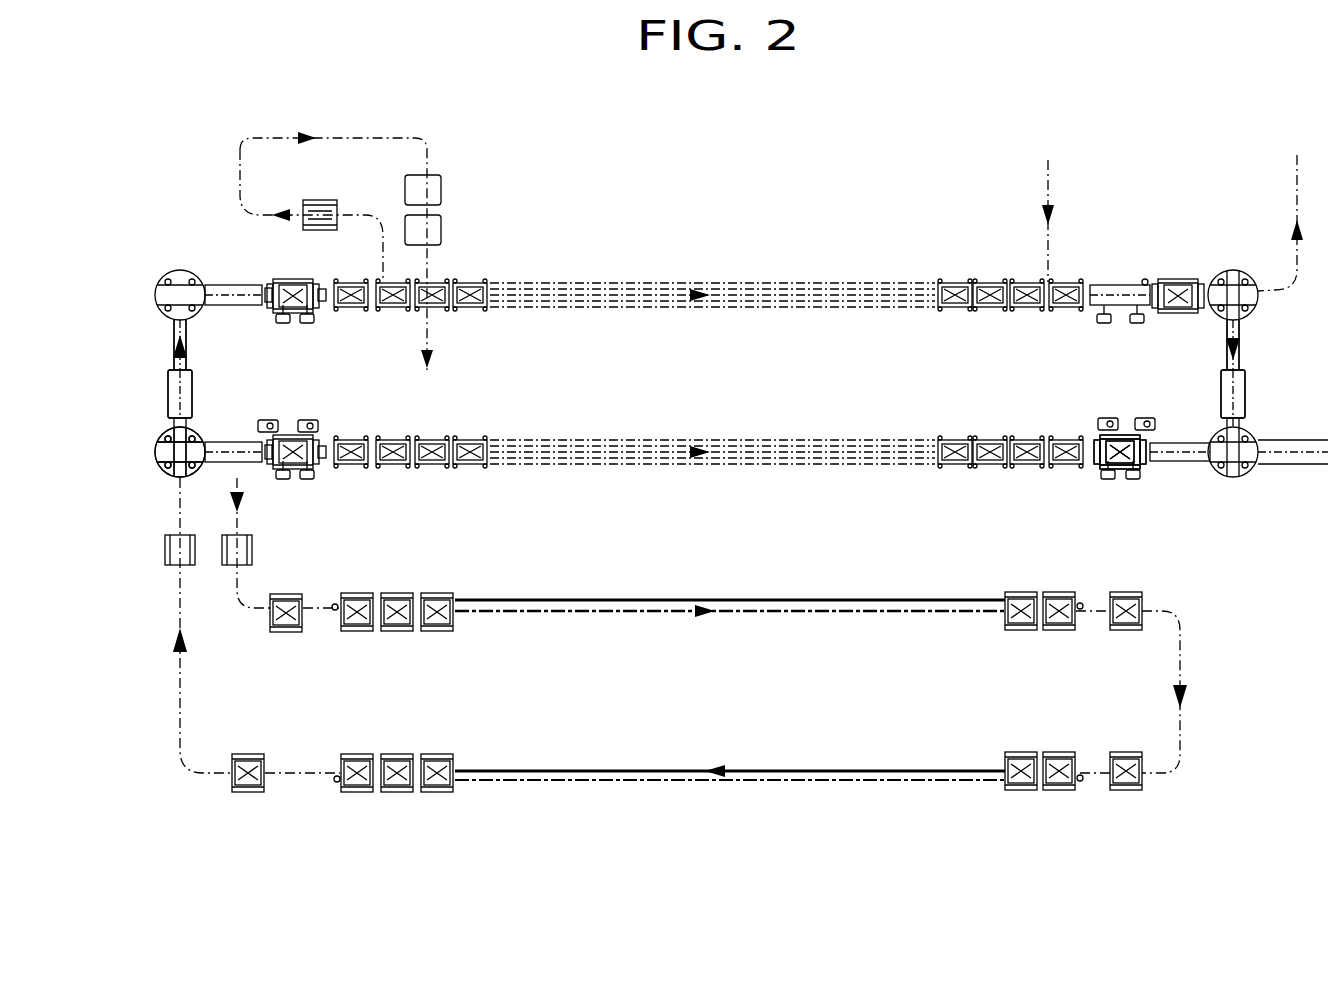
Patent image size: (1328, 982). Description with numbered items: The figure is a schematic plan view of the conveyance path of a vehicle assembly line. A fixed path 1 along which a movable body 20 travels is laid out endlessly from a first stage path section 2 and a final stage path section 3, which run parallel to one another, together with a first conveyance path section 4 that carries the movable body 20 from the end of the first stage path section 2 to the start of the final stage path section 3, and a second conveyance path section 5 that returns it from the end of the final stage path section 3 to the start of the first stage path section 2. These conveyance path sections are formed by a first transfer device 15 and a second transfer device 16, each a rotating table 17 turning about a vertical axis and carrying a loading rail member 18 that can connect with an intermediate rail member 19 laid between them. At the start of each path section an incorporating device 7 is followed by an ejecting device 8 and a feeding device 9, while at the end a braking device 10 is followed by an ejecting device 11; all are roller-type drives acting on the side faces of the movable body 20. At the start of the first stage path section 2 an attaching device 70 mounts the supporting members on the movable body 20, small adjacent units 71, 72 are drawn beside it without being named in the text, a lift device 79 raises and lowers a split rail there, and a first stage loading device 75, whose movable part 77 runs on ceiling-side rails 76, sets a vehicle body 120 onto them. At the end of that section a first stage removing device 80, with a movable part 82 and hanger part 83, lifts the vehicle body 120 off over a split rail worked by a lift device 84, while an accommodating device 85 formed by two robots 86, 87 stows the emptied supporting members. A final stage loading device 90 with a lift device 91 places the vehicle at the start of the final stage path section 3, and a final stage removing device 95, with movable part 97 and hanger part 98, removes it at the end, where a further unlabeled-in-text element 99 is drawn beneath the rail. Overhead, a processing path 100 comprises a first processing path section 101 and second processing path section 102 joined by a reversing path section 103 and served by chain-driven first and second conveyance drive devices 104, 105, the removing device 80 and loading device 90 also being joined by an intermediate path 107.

The fixed path 1 is at (712, 253).
The first stage path section 2 is at (758, 445).
The final stage path section 3 is at (742, 292).
The first conveyance path section 4 is at (196, 380).
The second conveyance path section 5 is at (1246, 370).
The incorporating device 7 is at (280, 280).
The ejecting device 8 is at (338, 311).
The feeding device 9 is at (372, 311).
The braking device 10 is at (1085, 311).
The ejecting device 11 is at (1132, 283).
The first transfer device 15 is at (1268, 320).
The second transfer device 16 is at (200, 353).
The rotating table 17 is at (186, 270).
The loading rail member 18 is at (160, 435).
The intermediate rail member 19 is at (172, 346).
The movable body 20 is at (166, 392).
The attaching device 70 is at (1121, 430).
The sensor 71 is at (1100, 417).
The sensor 72 is at (1146, 417).
The first stage loading device 75 is at (1178, 476).
The ceiling-side rails 76 is at (1266, 440).
The movable part 77 is at (1125, 482).
The lift device 79 is at (1105, 488).
The first stage removing device 80 is at (296, 480).
The movable part 82 is at (355, 474).
The hanger part 83 is at (433, 174).
The lift device 84 is at (312, 482).
The accommodating device 85 is at (294, 395).
The automatic accommodating device 86 is at (260, 418).
The automatic accommodating device 87 is at (318, 417).
The final stage loading device 90 is at (296, 326).
The lift device 91 is at (262, 326).
The final stage removing device 95 is at (1147, 262).
The movable part 97 is at (1193, 225).
The hanger part 98 is at (1183, 278).
The support foot 99 is at (1148, 330).
The processing path 100 is at (730, 752).
The first processing path section 101 is at (630, 614).
The second processing path section 102 is at (645, 768).
The reversing path section 103 is at (1178, 655).
The first conveyance drive device 104 is at (730, 603).
The second conveyance drive device 105 is at (730, 767).
The intermediate path 107 is at (368, 136).
The vehicle body 120 is at (992, 436).